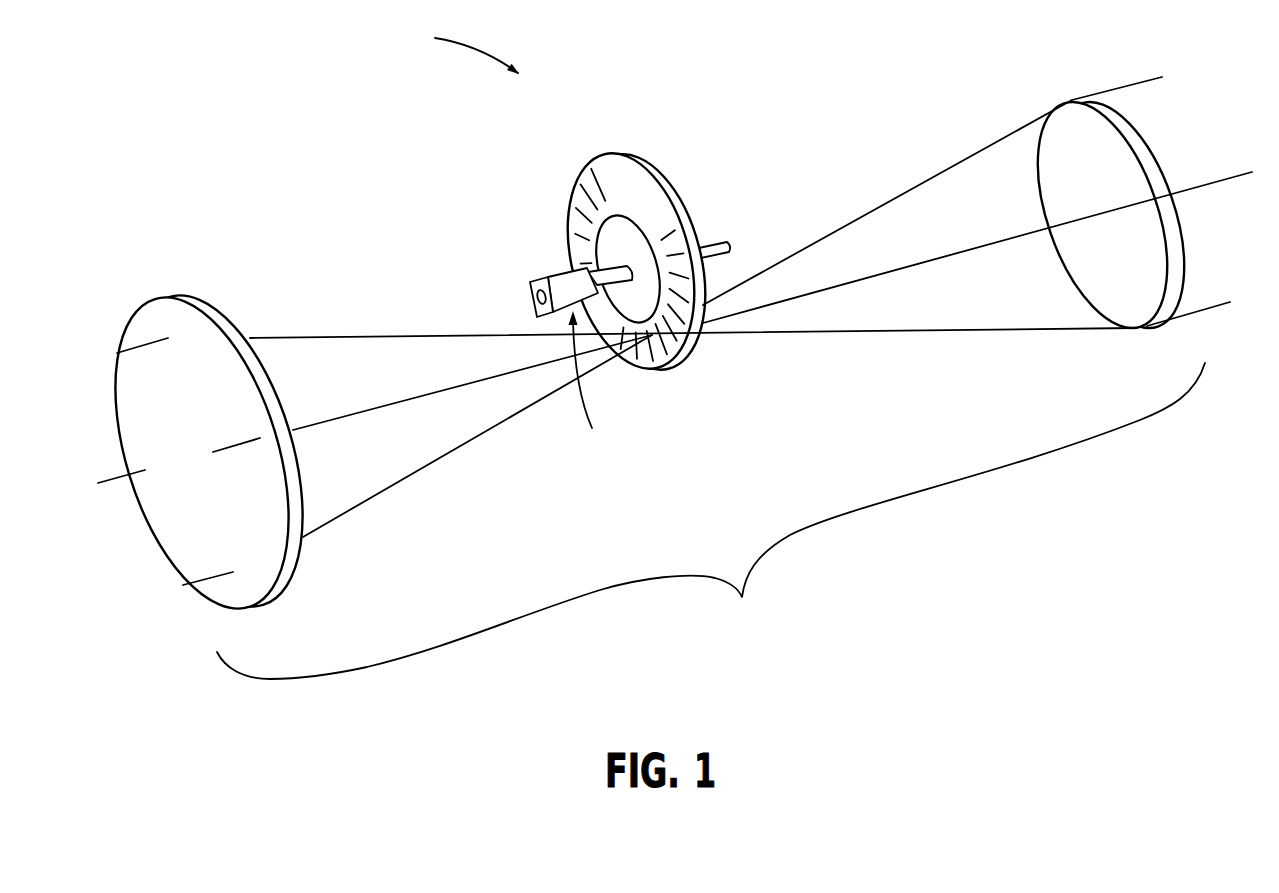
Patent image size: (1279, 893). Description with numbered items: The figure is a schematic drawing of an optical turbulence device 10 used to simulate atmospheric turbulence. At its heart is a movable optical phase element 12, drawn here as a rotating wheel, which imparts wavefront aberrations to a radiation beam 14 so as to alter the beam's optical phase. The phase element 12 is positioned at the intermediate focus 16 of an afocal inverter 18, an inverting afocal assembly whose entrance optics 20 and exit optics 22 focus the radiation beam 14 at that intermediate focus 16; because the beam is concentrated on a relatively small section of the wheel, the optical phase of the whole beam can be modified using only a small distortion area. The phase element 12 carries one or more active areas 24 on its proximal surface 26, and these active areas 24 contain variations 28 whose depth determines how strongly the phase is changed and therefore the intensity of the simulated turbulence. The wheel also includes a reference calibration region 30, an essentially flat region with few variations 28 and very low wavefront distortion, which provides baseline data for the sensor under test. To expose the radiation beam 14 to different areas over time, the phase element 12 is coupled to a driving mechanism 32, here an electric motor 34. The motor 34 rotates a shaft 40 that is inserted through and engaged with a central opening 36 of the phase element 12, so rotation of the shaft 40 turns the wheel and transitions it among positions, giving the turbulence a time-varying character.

The optical turbulence device 10 is at (460, 51).
The optical phase element 12 is at (629, 269).
The radiation beam 14 is at (457, 447).
The intermediate focus 16 is at (648, 340).
The afocal inverter 18 is at (711, 521).
The entrance optics 20 is at (173, 312).
The exit optics 22 is at (1074, 110).
The active area 24 is at (597, 186).
The proximal surface 26 is at (623, 238).
The variations 28 is at (588, 215).
The reference calibration region 30 is at (647, 202).
The driving mechanism 32 is at (591, 386).
The electric motor 34 is at (530, 282).
The central opening 36 is at (632, 272).
The shaft 40 is at (723, 258).